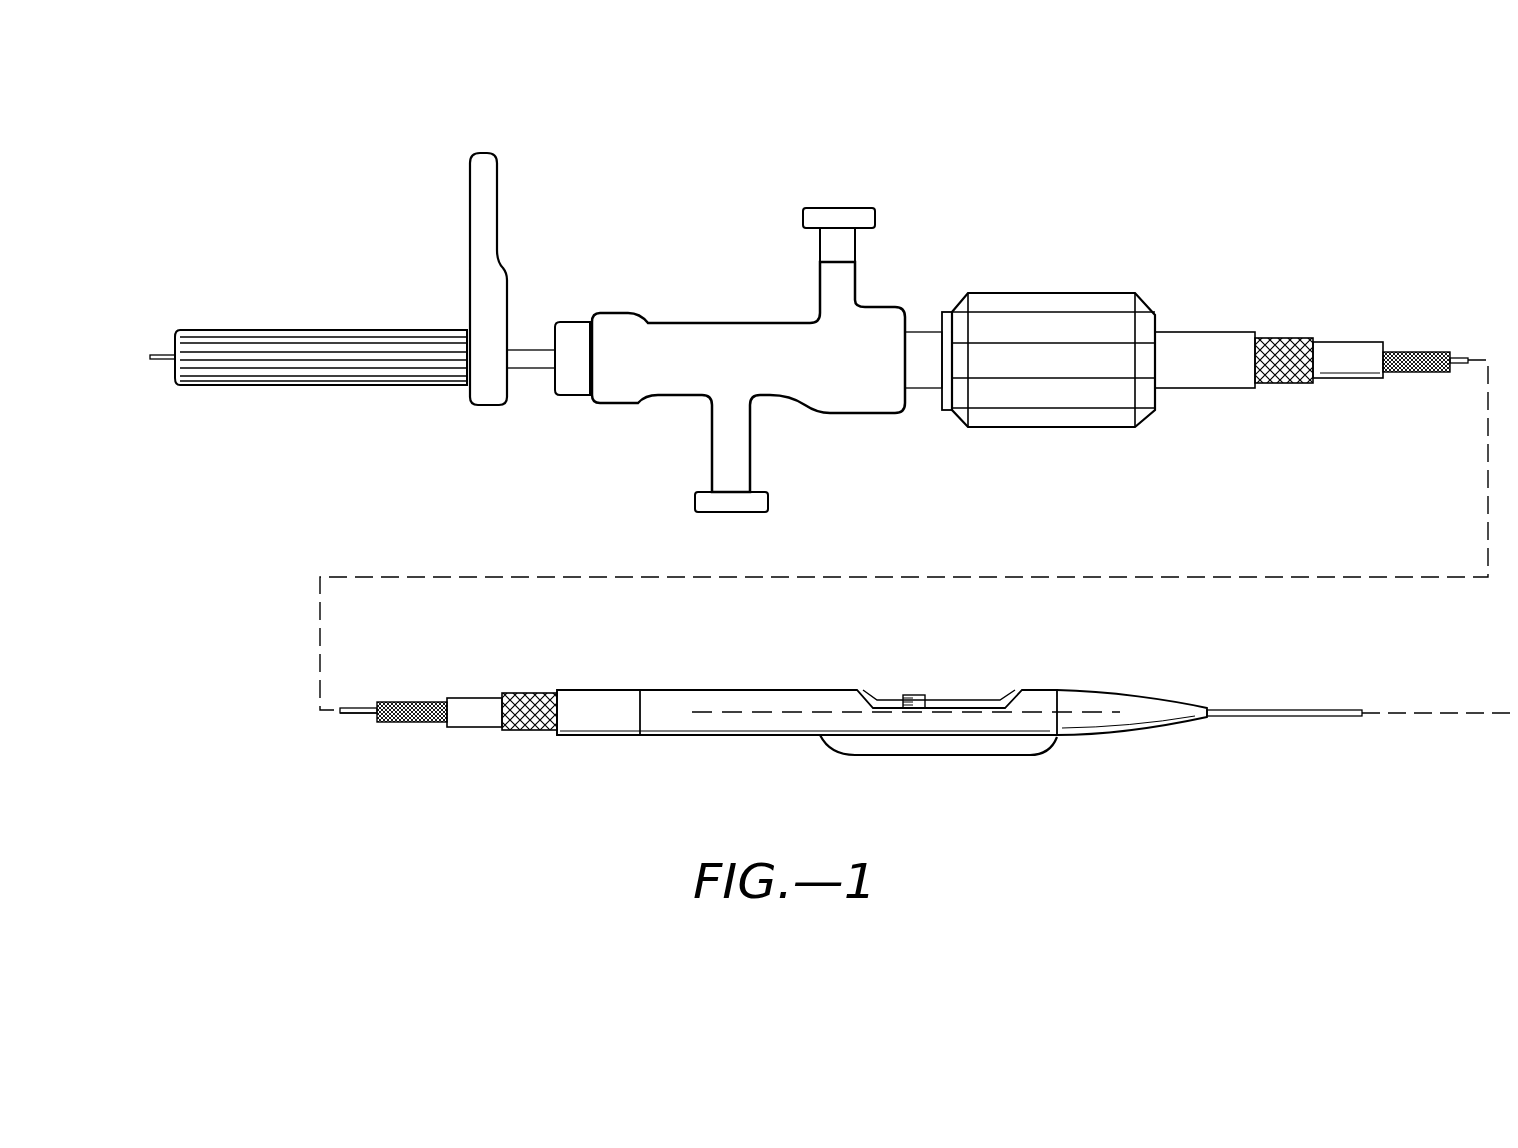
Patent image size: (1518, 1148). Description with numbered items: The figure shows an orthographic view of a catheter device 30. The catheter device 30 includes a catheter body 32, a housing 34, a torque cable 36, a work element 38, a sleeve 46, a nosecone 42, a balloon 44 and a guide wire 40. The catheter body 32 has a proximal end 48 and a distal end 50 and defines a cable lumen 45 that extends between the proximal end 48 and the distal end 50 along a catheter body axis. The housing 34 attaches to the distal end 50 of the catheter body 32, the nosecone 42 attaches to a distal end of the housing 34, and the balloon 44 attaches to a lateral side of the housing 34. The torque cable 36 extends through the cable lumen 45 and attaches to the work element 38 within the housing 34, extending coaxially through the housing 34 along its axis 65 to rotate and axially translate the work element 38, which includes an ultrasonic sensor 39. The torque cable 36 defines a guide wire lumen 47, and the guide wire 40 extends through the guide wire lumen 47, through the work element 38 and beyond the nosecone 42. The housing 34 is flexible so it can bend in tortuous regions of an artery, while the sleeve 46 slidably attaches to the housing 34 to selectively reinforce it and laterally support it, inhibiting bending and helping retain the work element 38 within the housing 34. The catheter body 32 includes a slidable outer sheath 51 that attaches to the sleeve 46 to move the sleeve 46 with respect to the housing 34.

The catheter device 30 is at (1018, 198).
The catheter body 32 is at (1203, 332).
The housing 34 is at (993, 700).
The torque cable 36 is at (1425, 372).
The work element 38 is at (918, 695).
The sensor 39 is at (906, 695).
The guide wire 40 is at (1464, 358).
The nosecone 42 is at (1113, 705).
The balloon 44 is at (948, 756).
The cable lumen 45 is at (446, 723).
The sleeve 46 is at (653, 736).
The guide wire lumen 47 is at (375, 714).
The proximal end 48 is at (1240, 338).
The distal end 50 is at (535, 731).
The outer sheath 51 is at (580, 695).
The axis 65 is at (1393, 714).